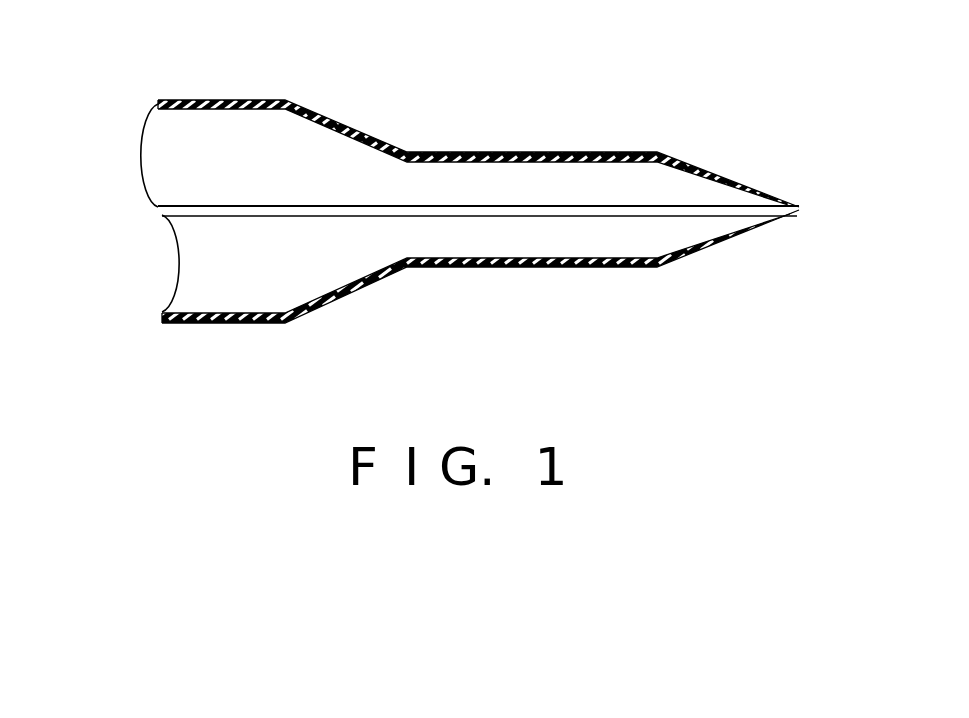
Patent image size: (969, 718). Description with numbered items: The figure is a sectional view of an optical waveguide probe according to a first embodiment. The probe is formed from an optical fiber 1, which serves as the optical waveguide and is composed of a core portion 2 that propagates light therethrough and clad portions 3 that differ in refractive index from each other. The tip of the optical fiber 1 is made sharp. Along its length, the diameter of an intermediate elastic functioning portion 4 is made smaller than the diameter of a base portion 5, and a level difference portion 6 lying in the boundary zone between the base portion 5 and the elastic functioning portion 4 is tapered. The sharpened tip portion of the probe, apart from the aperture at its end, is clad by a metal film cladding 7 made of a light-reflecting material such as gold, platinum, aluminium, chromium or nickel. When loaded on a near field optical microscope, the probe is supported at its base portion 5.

The optical fiber 1 is at (431, 194).
The core portion 2 is at (287, 208).
The clad portions 3 is at (110, 115).
The elastic functioning portion 4 is at (648, 66).
The base portion 5 is at (275, 66).
The level difference portion 6 is at (395, 66).
The metal film cladding 7 is at (705, 163).